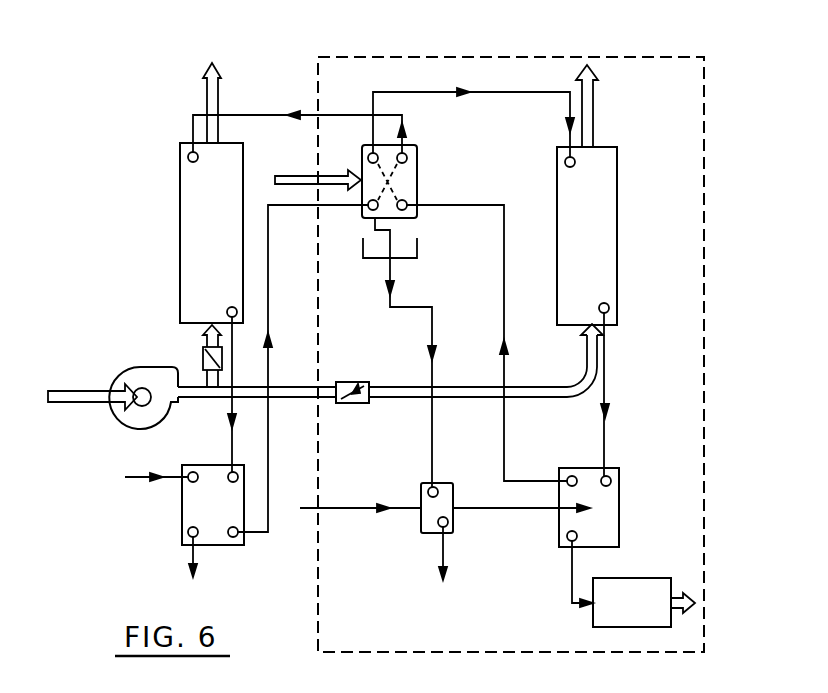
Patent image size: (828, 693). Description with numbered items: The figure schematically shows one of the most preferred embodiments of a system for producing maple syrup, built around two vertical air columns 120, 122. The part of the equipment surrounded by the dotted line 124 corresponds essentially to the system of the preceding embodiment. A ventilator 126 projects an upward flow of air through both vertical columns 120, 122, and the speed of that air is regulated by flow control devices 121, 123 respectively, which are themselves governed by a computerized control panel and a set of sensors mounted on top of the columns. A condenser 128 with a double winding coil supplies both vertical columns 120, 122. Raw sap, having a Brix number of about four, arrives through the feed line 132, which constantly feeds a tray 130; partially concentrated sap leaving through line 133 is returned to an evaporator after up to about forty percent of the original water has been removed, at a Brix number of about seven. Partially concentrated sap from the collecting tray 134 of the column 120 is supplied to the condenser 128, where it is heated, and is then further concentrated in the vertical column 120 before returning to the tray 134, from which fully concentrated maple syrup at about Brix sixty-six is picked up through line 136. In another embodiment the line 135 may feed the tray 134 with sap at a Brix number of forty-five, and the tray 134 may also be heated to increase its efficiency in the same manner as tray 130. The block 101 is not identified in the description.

The load / consumer unit 101 is at (643, 588).
The vertical air column 120 is at (180, 250).
The flow control device 121 is at (201, 353).
The vertical air column 122 is at (617, 246).
The flow control device 123 is at (352, 381).
The dotted line 124 is at (618, 56).
The ventilator 126 is at (127, 366).
The condenser 128 is at (418, 161).
The tray 130 is at (620, 505).
The feed line 132 is at (362, 512).
The line 133 is at (569, 560).
The collecting tray 134 is at (182, 513).
The line 135 is at (137, 476).
The line 136 is at (187, 556).